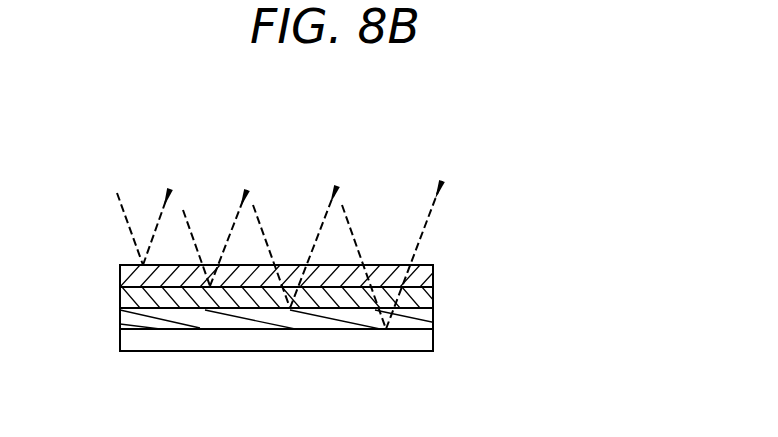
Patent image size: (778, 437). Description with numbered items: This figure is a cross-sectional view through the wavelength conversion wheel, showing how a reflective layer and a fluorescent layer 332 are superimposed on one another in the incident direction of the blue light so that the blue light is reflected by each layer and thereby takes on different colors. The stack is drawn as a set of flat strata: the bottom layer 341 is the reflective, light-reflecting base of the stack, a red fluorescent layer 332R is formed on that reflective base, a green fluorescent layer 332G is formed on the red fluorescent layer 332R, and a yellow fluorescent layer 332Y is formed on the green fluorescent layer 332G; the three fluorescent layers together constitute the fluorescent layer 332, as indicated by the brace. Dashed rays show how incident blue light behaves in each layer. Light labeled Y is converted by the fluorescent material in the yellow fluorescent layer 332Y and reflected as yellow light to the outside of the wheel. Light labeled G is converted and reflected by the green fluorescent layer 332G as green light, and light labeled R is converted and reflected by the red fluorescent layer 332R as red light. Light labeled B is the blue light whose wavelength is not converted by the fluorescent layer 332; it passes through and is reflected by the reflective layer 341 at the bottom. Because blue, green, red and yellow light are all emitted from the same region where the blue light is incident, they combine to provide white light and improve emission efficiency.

The fluorescent layer 332 is at (352, 294).
The yellow fluorescent layer 332Y is at (433, 273).
The green fluorescent layer 332G is at (433, 293).
The red fluorescent layer 332R is at (433, 319).
The substrate / reflective layer 341 is at (433, 341).
The yellow light Y is at (148, 210).
The green light G is at (220, 221).
The red light R is at (300, 231).
The blue light B is at (395, 237).